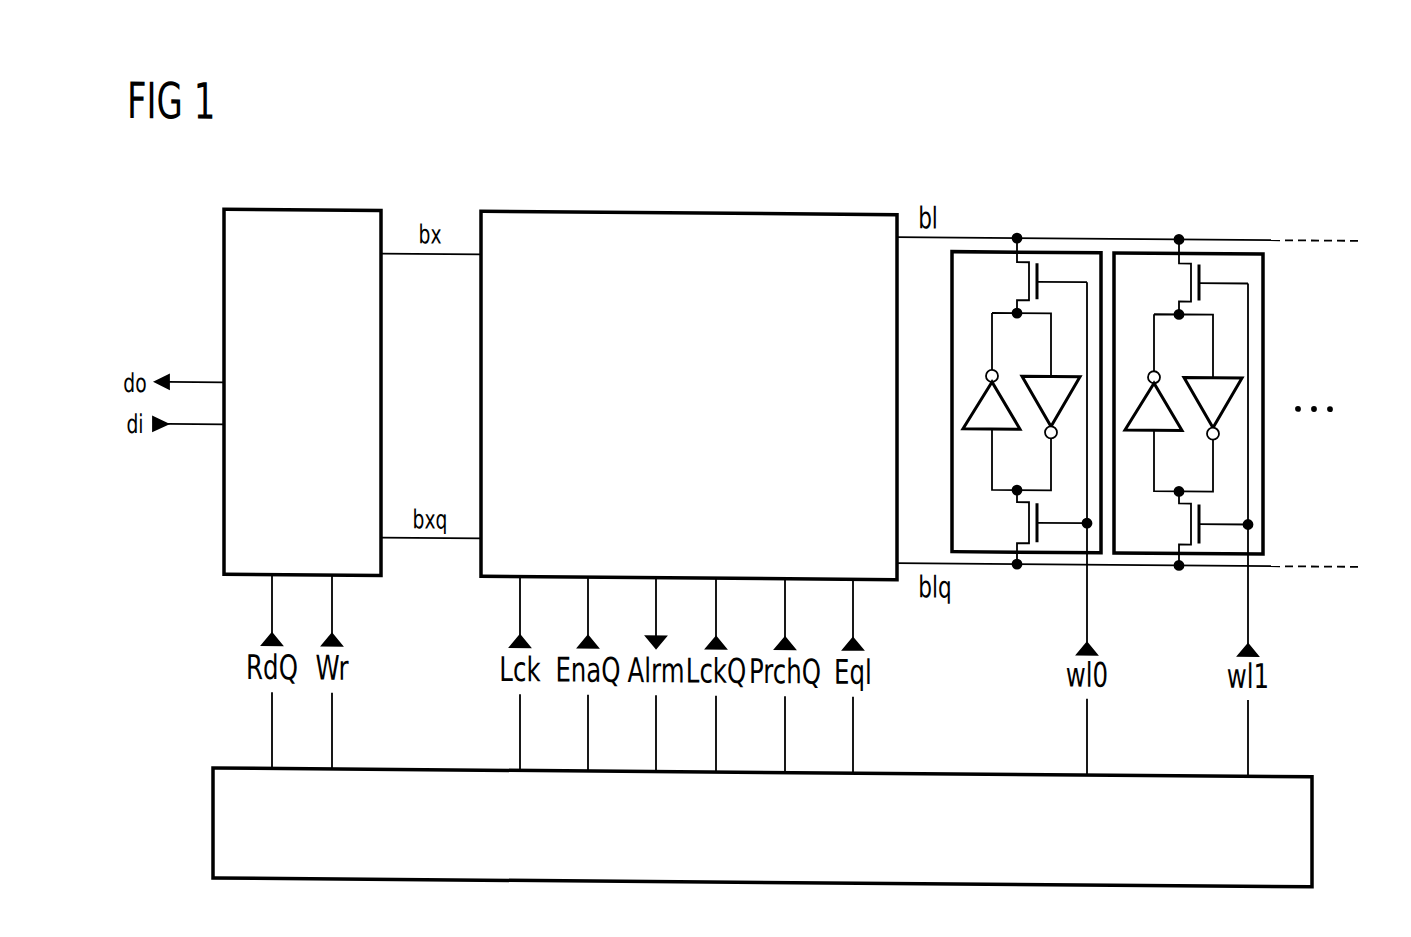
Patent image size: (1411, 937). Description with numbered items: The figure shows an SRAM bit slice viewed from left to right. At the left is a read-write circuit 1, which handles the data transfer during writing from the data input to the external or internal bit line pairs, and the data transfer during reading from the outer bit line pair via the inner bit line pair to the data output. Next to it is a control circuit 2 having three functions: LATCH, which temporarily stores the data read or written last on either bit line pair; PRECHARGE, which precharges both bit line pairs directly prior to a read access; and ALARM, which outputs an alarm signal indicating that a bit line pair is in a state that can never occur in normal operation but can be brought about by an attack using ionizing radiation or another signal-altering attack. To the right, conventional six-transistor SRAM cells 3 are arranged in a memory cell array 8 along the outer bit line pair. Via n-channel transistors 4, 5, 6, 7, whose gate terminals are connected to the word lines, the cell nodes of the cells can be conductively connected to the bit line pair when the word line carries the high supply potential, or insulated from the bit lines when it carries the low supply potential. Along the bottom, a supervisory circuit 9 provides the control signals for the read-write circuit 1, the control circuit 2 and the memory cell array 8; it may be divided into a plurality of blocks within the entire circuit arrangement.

The read-write circuit 1 is at (305, 207).
The control circuit 2 is at (688, 207).
The six-transistor SRAM cell 3 is at (1107, 355).
The n-channel transistor 4 is at (1028, 268).
The n-channel transistor 5 is at (1028, 509).
The n-channel transistor 6 is at (1190, 268).
The n-channel transistor 7 is at (1190, 509).
The memory cell array 8 is at (958, 127).
The supervisory circuit 9 is at (1312, 821).